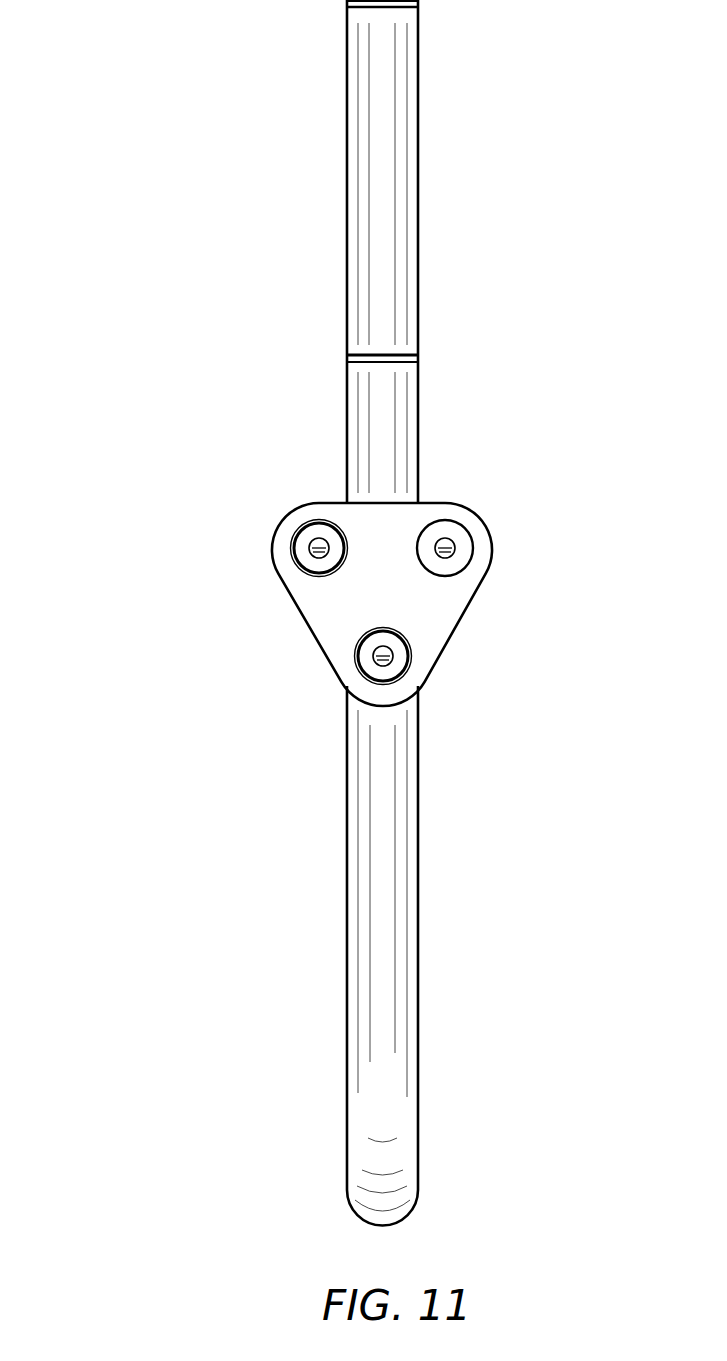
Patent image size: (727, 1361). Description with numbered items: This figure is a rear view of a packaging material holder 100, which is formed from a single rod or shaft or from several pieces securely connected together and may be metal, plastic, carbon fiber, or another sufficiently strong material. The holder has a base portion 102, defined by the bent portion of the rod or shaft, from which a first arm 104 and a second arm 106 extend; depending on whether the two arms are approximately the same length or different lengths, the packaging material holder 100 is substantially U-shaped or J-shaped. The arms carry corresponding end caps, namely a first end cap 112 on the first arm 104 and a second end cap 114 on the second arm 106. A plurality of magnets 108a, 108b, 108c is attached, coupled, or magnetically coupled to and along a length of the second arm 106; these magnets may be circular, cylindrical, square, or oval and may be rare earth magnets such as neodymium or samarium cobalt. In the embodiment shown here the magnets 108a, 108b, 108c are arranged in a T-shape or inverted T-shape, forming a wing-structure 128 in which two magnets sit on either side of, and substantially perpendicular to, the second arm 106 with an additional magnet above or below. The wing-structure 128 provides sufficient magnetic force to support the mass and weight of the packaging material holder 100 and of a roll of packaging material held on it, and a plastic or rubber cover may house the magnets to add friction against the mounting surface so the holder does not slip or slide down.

The packaging material holder 100 is at (126, 55).
The base portion 102 is at (347, 1180).
The first arm 104 is at (347, 192).
The second arm 106 is at (347, 898).
The magnet 108a is at (291, 552).
The magnet 108b is at (473, 552).
The magnet 108c is at (411, 660).
The first end cap 112 is at (418, 3).
The second end cap 114 is at (347, 362).
The wing-structure 128 is at (292, 616).